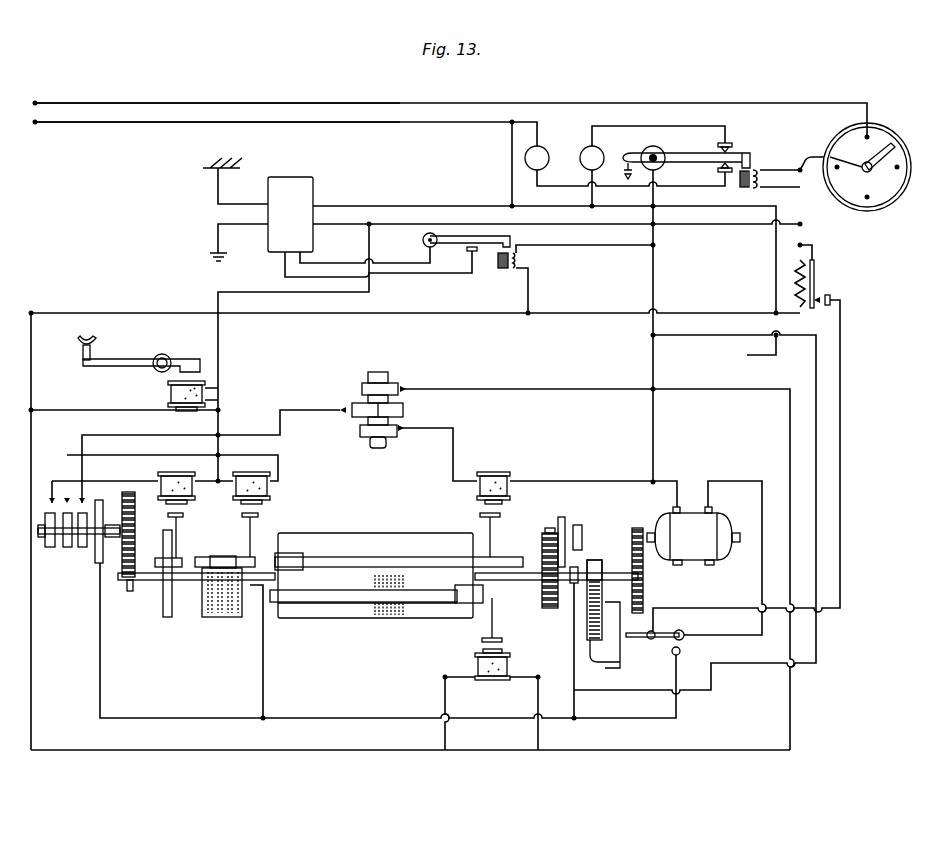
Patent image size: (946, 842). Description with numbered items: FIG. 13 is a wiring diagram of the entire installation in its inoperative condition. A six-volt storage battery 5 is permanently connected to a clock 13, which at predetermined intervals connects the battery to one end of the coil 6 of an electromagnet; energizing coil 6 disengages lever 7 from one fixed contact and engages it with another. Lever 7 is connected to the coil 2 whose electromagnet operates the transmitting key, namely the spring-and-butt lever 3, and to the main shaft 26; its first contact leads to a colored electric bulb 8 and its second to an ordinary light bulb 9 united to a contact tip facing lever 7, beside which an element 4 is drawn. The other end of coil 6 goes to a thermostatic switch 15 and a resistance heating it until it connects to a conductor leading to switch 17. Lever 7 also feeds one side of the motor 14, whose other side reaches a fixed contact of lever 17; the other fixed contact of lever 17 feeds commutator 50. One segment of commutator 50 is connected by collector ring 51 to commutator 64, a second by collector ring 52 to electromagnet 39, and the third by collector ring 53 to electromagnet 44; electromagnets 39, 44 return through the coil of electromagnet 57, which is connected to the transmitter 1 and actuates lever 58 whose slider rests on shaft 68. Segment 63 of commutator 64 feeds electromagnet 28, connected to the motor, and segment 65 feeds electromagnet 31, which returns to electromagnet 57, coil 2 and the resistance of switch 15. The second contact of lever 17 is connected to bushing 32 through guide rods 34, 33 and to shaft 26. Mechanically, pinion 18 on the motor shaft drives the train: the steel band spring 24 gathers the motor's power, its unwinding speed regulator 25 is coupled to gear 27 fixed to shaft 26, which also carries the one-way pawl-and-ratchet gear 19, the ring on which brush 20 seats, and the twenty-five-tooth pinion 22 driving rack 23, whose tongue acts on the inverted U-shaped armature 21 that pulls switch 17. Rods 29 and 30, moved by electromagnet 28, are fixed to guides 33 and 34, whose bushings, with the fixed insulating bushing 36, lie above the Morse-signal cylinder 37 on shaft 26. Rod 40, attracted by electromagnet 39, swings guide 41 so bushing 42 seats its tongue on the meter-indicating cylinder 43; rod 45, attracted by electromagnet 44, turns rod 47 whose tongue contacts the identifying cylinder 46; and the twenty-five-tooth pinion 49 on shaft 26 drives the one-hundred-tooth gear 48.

The transmitter 1 is at (290, 214).
The coil 2 is at (514, 273).
The lever 3 is at (456, 244).
The contact 4 is at (624, 163).
The storage battery 5 is at (217, 112).
The coil 6 is at (762, 168).
The lever 7 is at (692, 157).
The colored electric bulb 8 is at (592, 158).
The light bulb 9 is at (537, 158).
The clock 13 is at (896, 139).
The motor 14 is at (693, 536).
The thermostatic switch 15 is at (818, 283).
The switch 17 is at (655, 648).
The pinion 18 is at (637, 528).
The gear with pawl and ratchet 19 is at (608, 600).
The brush 20 is at (583, 573).
The inverted U-shaped armature 21 is at (627, 662).
The pinion 22 is at (578, 566).
The rack 23 is at (603, 600).
The steel band spring 24 is at (580, 528).
The unwinding speed regulator 25 is at (558, 522).
The main shaft 26 is at (525, 570).
The gear 27 is at (540, 548).
The electromagnet 28 is at (502, 472).
The rod 29 is at (481, 520).
The rod 30 is at (484, 600).
The electromagnet 31 is at (492, 683).
The bushing 32 is at (465, 604).
The guide rod 33 is at (437, 557).
The guide rod 34 is at (422, 618).
The insulating bushing 36 is at (296, 557).
The hollow metal cylinder 37 is at (385, 618).
The electromagnet 39 is at (272, 489).
The rod 40 is at (255, 538).
The rod 41 is at (236, 556).
The bushing 42 is at (223, 561).
The cylinder 43 is at (217, 618).
The electromagnet 44 is at (196, 489).
The rod 45 is at (178, 538).
The cylinder 46 is at (164, 618).
The rod 47 is at (160, 561).
The gear 48 is at (136, 521).
The pinion 49 is at (130, 591).
The commutator 50 is at (100, 502).
The collector ring 51 is at (83, 548).
The collector ring 52 is at (67, 548).
The collector ring 53 is at (50, 548).
The electromagnet 57 is at (168, 393).
The lever 58 is at (186, 359).
The commutator segment 63 is at (360, 432).
The commutator 64 is at (404, 413).
The commutator segment 65 is at (360, 387).
The shaft 68 is at (88, 338).